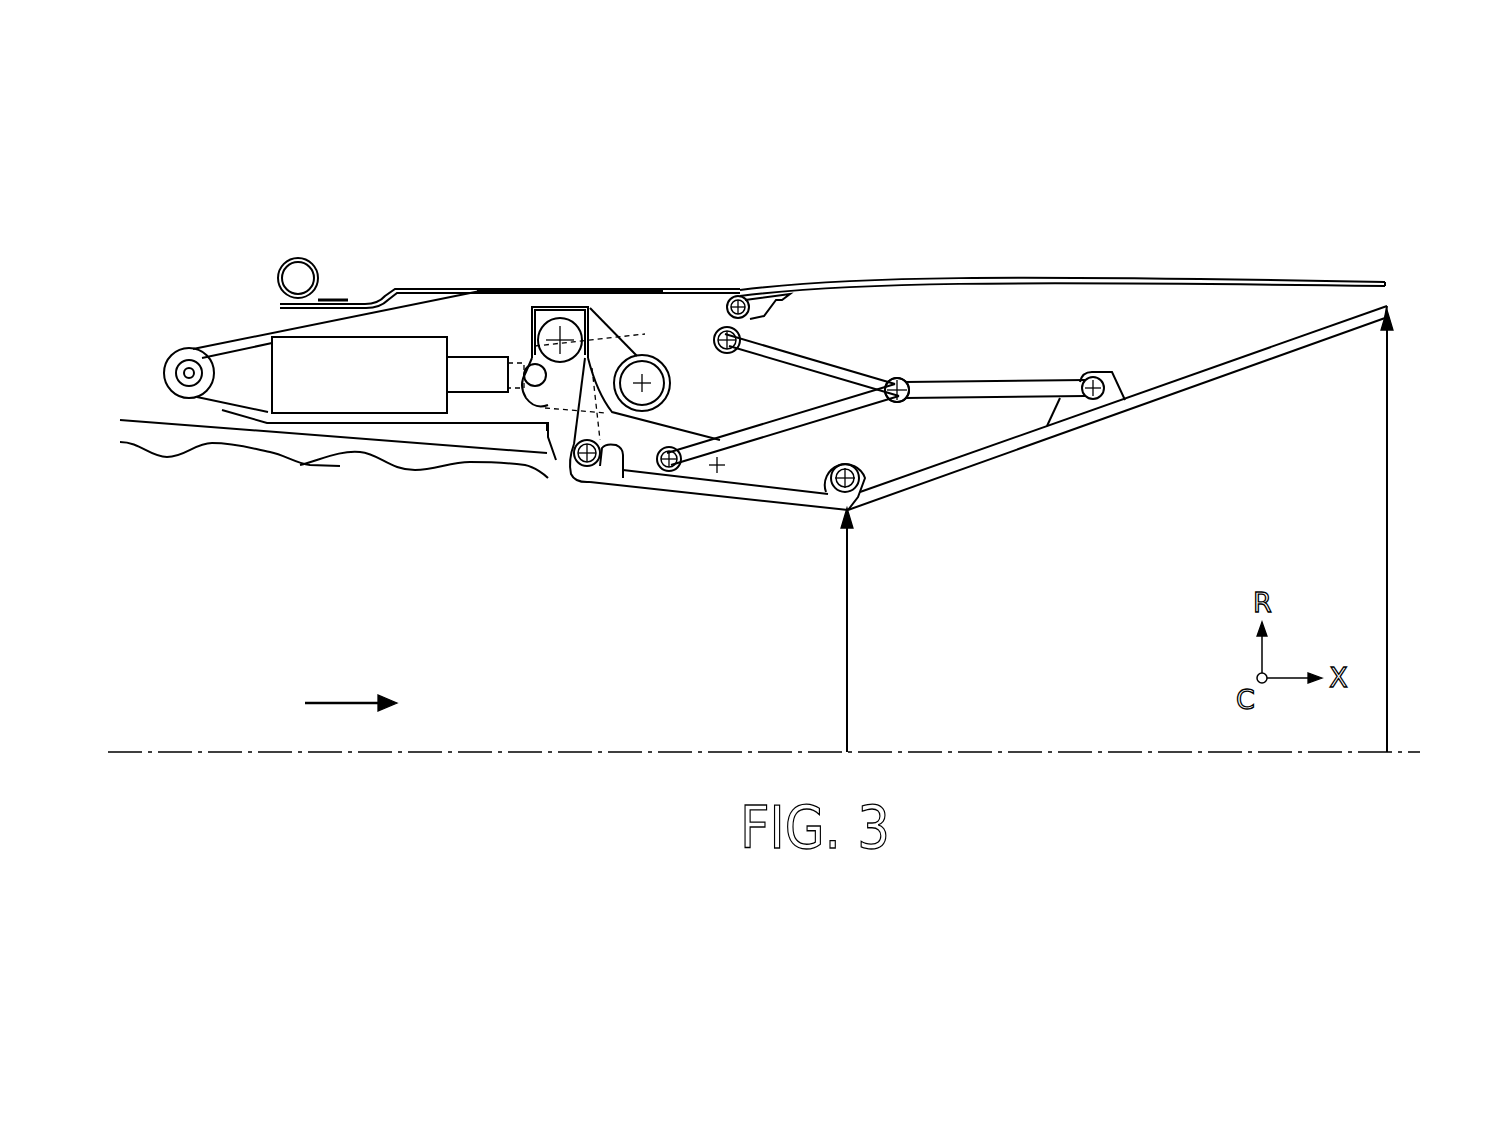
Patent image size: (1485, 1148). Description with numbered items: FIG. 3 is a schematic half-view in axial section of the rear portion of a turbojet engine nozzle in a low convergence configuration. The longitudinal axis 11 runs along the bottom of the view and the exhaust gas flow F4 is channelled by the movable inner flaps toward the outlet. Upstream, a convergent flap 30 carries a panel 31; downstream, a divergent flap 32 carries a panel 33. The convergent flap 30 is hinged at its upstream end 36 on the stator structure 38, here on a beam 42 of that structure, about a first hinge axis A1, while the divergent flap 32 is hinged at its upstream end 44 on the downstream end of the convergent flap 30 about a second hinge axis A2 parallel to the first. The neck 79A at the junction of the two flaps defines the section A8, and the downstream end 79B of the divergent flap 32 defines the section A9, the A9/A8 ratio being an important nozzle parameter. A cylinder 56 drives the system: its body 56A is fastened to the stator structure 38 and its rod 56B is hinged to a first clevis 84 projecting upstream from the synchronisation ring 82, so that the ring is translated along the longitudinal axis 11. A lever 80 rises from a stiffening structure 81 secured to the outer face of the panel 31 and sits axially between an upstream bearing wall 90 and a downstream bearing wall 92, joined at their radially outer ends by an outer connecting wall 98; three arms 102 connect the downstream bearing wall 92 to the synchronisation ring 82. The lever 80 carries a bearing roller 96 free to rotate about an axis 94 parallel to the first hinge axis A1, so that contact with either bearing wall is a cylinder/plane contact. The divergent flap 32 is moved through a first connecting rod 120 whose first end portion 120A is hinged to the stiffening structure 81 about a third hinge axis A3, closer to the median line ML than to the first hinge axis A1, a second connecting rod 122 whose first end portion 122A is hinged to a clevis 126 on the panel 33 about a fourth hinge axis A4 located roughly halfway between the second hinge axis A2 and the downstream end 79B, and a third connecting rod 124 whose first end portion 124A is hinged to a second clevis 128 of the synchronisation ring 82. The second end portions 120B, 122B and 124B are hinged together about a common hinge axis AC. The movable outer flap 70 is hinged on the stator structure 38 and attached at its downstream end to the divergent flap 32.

The longitudinal axis 11 is at (1197, 752).
The convergent flap 30 is at (500, 598).
The panel 31 is at (612, 480).
The divergent flap 32 is at (1185, 392).
The panel 33 is at (1280, 348).
The upstream end 36 is at (560, 430).
The stator structure 38 is at (509, 228).
The beam 42 is at (396, 300).
The upstream end 44 is at (858, 492).
The cylinder 56 is at (355, 447).
The body 56A is at (300, 413).
The rod 56B is at (523, 400).
The movable outer flap 70 is at (1305, 275).
The neck 79A is at (843, 515).
The downstream end 79B is at (1392, 305).
The lever 80 is at (550, 420).
The stiffening structure 81 is at (720, 472).
The synchronisation ring 82 is at (678, 355).
The first clevis 84 is at (543, 383).
The upstream bearing wall 90 is at (532, 320).
The downstream bearing wall 92 is at (618, 360).
The axis 94 is at (548, 325).
The bearing roller 96 is at (582, 335).
The outer connecting wall 98 is at (562, 318).
The arm 102 is at (648, 352).
The first connecting rod 120 is at (750, 468).
The first end portion 120A is at (688, 480).
The second end portion 120B is at (898, 402).
The second connecting rod 122 is at (992, 386).
The first end portion 122A is at (1095, 400).
The second end portion 122B is at (913, 386).
The third connecting rod 124 is at (822, 358).
The first end portion 124A is at (752, 300).
The second end portion 124B is at (897, 378).
The clevis 126 is at (1152, 375).
The second clevis 128 is at (690, 370).
The first hinge axis A1 is at (607, 447).
The second hinge axis A2 is at (856, 488).
The third hinge axis A3 is at (674, 472).
The fourth hinge axis A4 is at (1100, 378).
The nozzle section at the neck A8 is at (848, 650).
The nozzle section at the downstream end A9 is at (1386, 555).
The common hinge axis AC is at (902, 400).
The median line ML is at (698, 458).
The exhaust gas flow F4 is at (338, 700).